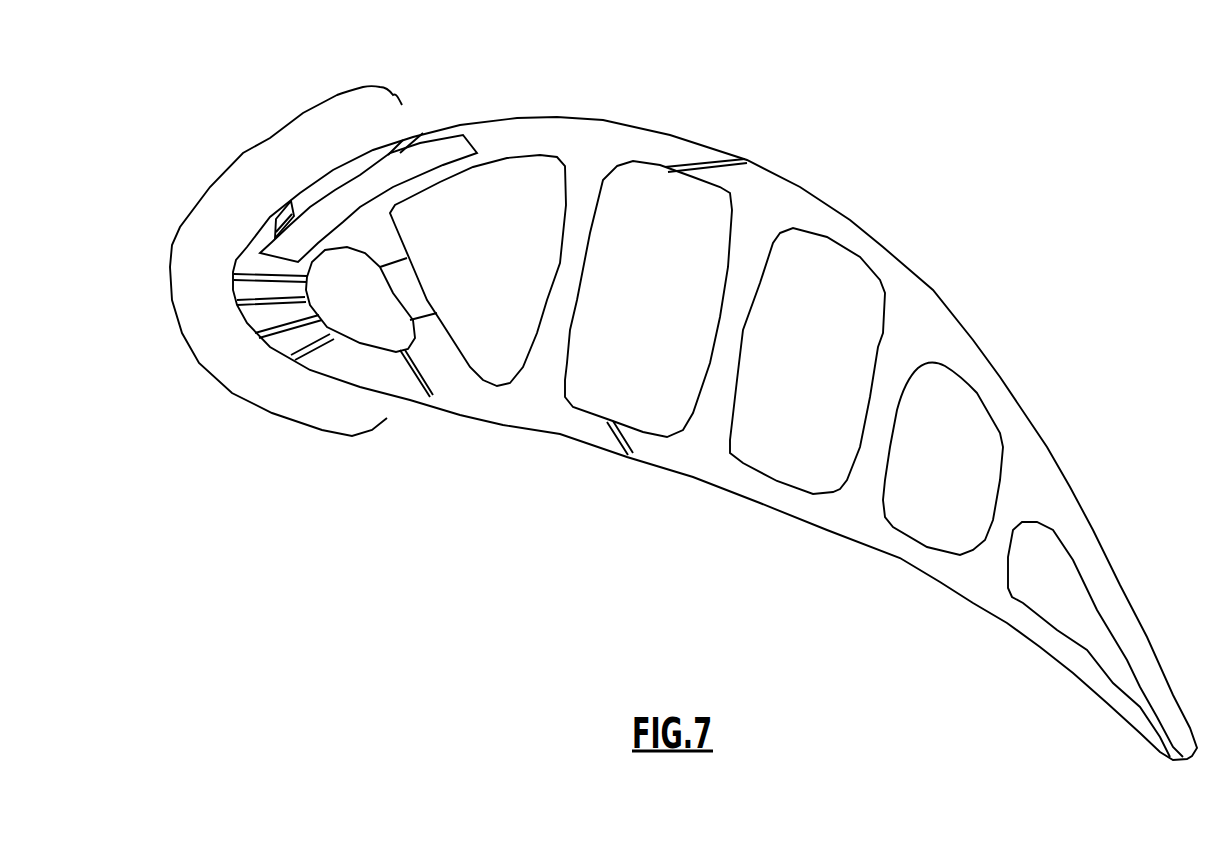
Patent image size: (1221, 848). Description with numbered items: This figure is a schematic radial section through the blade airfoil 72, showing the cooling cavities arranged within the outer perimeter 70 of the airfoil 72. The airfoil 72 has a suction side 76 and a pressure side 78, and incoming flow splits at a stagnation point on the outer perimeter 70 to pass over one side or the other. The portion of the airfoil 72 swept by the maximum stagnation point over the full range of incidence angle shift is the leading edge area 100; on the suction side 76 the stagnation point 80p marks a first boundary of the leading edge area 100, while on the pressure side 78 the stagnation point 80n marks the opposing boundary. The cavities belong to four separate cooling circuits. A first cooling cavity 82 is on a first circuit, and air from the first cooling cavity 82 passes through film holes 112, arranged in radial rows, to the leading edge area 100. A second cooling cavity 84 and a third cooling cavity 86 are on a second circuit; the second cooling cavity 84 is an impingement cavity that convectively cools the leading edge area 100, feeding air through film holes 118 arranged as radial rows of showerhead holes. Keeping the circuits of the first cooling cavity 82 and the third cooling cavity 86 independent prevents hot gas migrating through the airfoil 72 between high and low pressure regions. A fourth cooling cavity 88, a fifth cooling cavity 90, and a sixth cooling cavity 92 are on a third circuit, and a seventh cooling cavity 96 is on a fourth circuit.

The outer perimeter 70 is at (707, 142).
The airfoil 72 is at (986, 125).
The suction side 76 is at (747, 74).
The pressure side 78 is at (657, 530).
The stagnation point 80p is at (423, 124).
The stagnation point 80n is at (405, 400).
The first cooling cavity 82 is at (467, 146).
The second cooling cavity 84 is at (371, 323).
The third cooling cavity 86 is at (485, 356).
The fourth cooling cavity 88 is at (707, 227).
The fifth cooling cavity 90 is at (850, 293).
The sixth cooling cavity 92 is at (937, 388).
The seventh cooling cavity 96 is at (1050, 573).
The leading edge area 100 is at (172, 245).
The film holes 112 is at (288, 207).
The film holes 118 is at (320, 343).